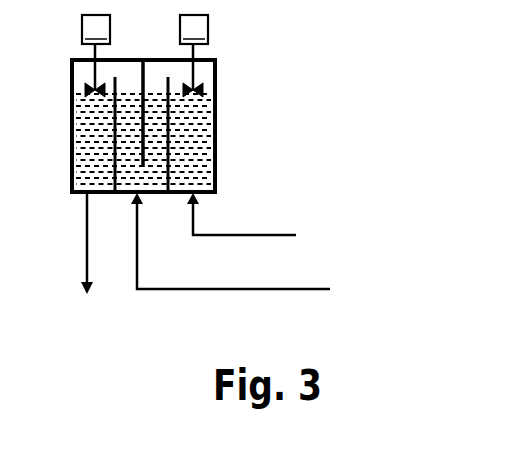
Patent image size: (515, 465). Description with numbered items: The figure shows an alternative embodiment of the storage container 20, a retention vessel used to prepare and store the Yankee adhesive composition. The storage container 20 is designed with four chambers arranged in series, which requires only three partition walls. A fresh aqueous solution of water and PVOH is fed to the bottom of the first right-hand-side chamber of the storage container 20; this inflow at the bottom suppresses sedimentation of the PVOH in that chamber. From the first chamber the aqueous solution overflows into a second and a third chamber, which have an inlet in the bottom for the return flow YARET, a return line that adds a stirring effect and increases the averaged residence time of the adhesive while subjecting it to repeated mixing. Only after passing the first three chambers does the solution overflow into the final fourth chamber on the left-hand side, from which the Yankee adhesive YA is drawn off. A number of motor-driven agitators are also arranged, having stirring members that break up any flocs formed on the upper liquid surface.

The storage container 20 is at (219, 90).
The Yankee adhesive YA is at (74, 259).
The return flow YARET is at (263, 251).
The element PVOH is at (342, 221).